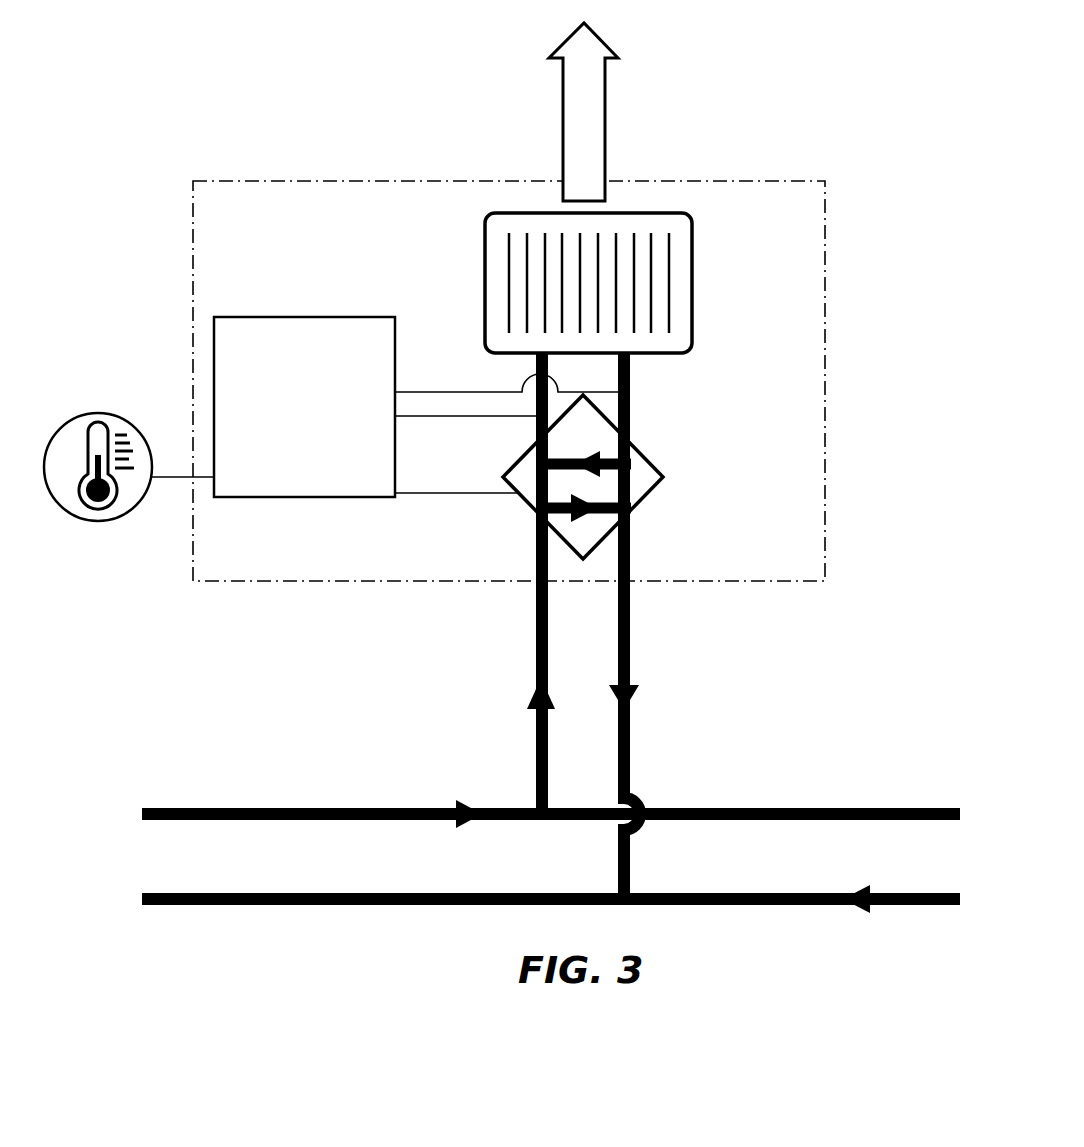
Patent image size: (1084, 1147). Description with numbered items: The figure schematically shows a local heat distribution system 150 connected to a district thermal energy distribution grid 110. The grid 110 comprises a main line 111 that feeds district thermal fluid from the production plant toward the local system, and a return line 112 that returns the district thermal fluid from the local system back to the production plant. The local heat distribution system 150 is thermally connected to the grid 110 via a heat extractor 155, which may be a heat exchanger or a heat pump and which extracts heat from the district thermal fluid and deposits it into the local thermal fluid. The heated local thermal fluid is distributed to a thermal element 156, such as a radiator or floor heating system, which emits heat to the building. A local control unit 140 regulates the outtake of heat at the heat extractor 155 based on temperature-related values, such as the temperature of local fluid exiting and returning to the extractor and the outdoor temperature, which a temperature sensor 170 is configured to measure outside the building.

The district thermal energy distribution grid 110 is at (551, 882).
The main line 111 is at (422, 808).
The return line 112 is at (735, 892).
The local control unit 140 is at (297, 498).
The local heat distribution system 150 is at (808, 557).
The heat extractor 155 is at (657, 470).
The thermal element 156 is at (680, 262).
The temperature sensor 170 is at (128, 490).